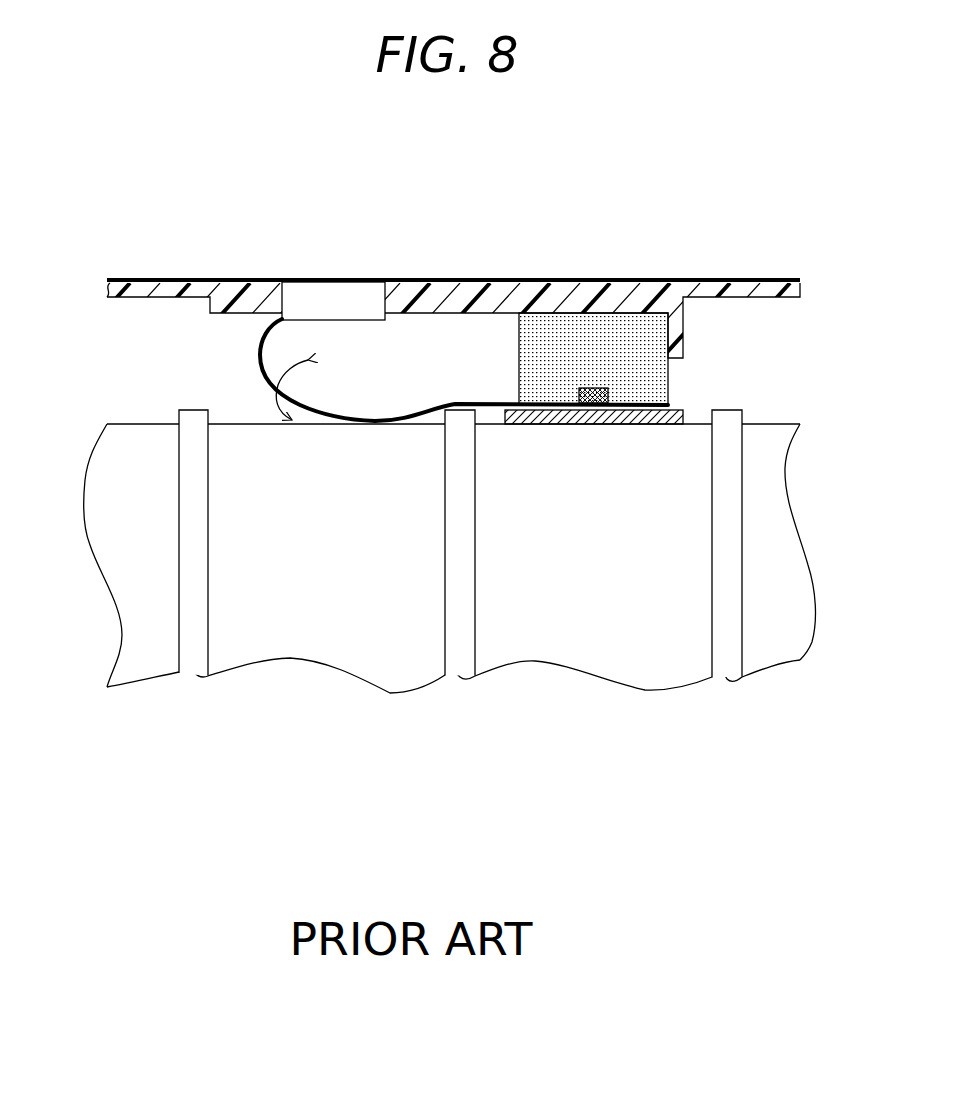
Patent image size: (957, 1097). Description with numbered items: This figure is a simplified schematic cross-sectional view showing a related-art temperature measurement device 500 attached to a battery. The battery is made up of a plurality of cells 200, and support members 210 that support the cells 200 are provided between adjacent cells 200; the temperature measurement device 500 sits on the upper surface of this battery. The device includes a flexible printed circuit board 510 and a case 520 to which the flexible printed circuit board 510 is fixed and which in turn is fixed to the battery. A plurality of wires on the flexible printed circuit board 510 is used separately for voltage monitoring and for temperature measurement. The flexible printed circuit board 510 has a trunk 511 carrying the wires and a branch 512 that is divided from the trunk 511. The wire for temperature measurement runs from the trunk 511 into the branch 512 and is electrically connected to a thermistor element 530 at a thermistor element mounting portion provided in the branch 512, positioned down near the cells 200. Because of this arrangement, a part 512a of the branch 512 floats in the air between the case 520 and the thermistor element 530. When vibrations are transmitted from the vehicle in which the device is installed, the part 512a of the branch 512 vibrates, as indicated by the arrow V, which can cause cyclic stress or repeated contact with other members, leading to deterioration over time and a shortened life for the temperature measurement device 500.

The cell 200 is at (140, 653).
The support member 210 is at (193, 653).
The temperature measurement device 500 is at (459, 282).
The flexible printed circuit board 510 is at (455, 276).
The trunk 511 is at (622, 280).
The branch 512 is at (327, 300).
The part of the branch 512a is at (320, 407).
The case 520 is at (159, 294).
The thermistor element 530 is at (582, 388).